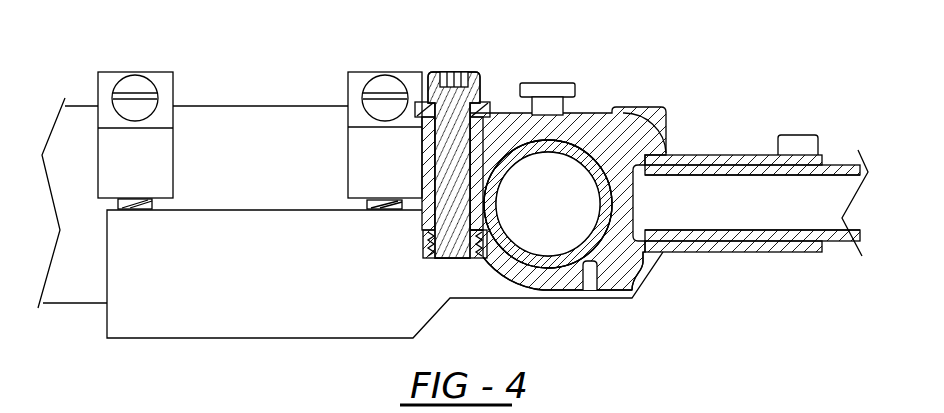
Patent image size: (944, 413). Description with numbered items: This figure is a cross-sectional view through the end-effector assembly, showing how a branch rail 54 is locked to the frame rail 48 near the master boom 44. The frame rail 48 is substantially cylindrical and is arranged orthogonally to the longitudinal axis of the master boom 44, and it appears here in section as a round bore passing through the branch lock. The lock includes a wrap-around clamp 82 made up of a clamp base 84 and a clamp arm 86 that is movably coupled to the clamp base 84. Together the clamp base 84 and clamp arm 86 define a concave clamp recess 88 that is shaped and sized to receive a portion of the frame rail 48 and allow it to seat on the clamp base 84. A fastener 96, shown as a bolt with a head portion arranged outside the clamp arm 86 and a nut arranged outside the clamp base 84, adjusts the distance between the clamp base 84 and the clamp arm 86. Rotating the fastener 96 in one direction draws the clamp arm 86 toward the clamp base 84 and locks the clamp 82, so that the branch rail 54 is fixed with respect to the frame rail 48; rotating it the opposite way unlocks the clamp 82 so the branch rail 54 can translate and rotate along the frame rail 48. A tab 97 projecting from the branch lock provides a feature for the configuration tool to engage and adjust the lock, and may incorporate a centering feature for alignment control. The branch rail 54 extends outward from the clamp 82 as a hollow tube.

The master boom 44 is at (275, 105).
The frame rail 48 is at (596, 172).
The branch rail 54 is at (845, 165).
The clamp 82 is at (640, 273).
The clamp base 84 is at (548, 280).
The clamp arm 86 is at (634, 112).
The clamp recess 88 is at (592, 113).
The fastener 96 is at (461, 72).
The tabs 97 is at (567, 85).